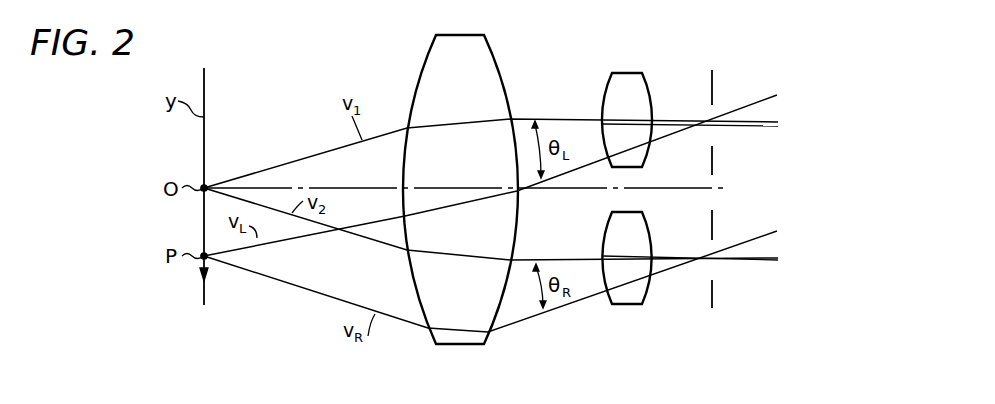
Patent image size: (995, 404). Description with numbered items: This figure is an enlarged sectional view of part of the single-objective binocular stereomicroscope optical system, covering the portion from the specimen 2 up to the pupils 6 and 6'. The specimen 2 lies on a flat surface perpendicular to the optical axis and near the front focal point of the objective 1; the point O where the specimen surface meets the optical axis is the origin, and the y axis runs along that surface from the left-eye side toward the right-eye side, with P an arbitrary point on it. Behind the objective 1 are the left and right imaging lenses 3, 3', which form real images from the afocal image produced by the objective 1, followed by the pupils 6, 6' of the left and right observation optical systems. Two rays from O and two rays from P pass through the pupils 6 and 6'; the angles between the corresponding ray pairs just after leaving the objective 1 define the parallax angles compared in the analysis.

The objective 1 is at (496, 70).
The specimen 2 is at (204, 80).
The left imaging lens 3 is at (627, 104).
The right imaging lens 3' is at (629, 277).
The pupil of the left observation optical system 6 is at (727, 108).
The pupil of the right observation optical system 6' is at (730, 276).